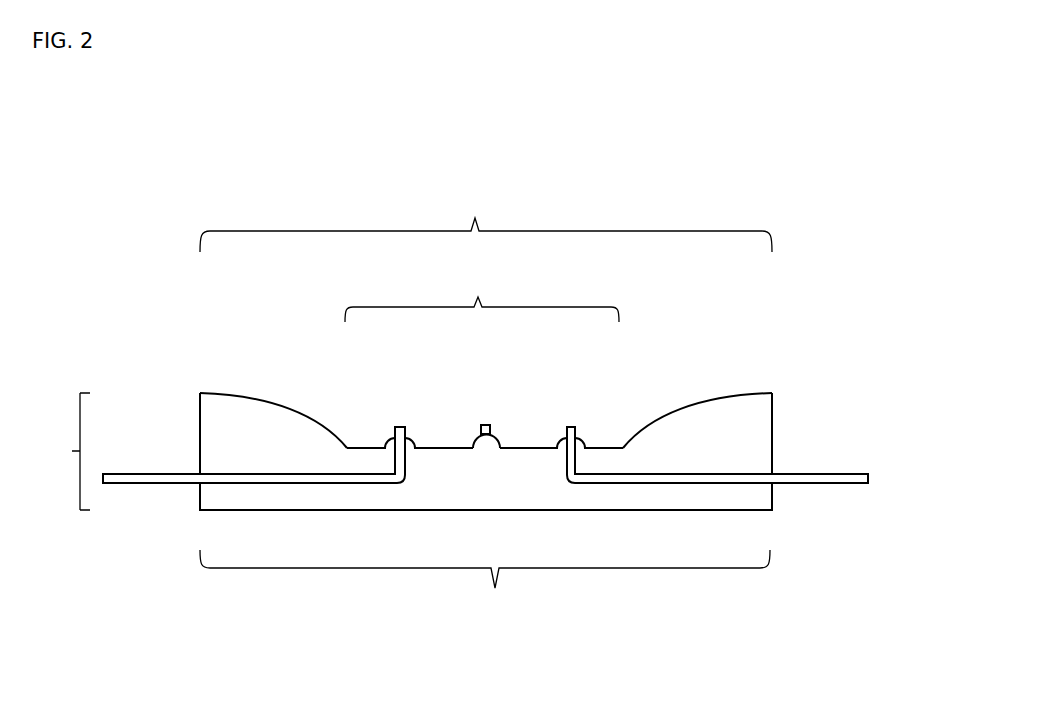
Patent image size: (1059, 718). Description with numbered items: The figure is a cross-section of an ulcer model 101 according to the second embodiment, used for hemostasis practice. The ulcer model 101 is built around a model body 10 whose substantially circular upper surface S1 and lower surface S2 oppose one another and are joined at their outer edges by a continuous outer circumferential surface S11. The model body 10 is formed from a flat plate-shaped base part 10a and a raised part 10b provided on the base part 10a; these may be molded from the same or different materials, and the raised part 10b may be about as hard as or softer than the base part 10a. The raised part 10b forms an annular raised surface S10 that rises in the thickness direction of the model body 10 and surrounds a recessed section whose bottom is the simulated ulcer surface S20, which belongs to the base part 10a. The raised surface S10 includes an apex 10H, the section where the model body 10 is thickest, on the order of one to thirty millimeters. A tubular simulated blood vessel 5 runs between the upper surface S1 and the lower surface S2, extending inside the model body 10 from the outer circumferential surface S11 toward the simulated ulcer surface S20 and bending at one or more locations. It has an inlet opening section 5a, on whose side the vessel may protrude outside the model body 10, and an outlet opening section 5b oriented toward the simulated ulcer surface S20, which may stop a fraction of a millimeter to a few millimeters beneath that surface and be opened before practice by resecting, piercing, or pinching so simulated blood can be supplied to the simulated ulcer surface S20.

The ulcer model 101 is at (674, 184).
The model body 10 is at (855, 393).
The base part 10a is at (768, 432).
The raised part 10b is at (766, 497).
The apex 10H is at (208, 392).
The raised surface S10 is at (297, 404).
The simulated blood vessel 5 is at (140, 474).
The inlet opening section 5a is at (103, 474).
The outlet opening section 5b is at (566, 427).
The upper surface S1 is at (486, 220).
The simulated ulcer surface S20 is at (482, 296).
The lower surface S2 is at (485, 583).
The outer circumferential surface S11 is at (64, 451).